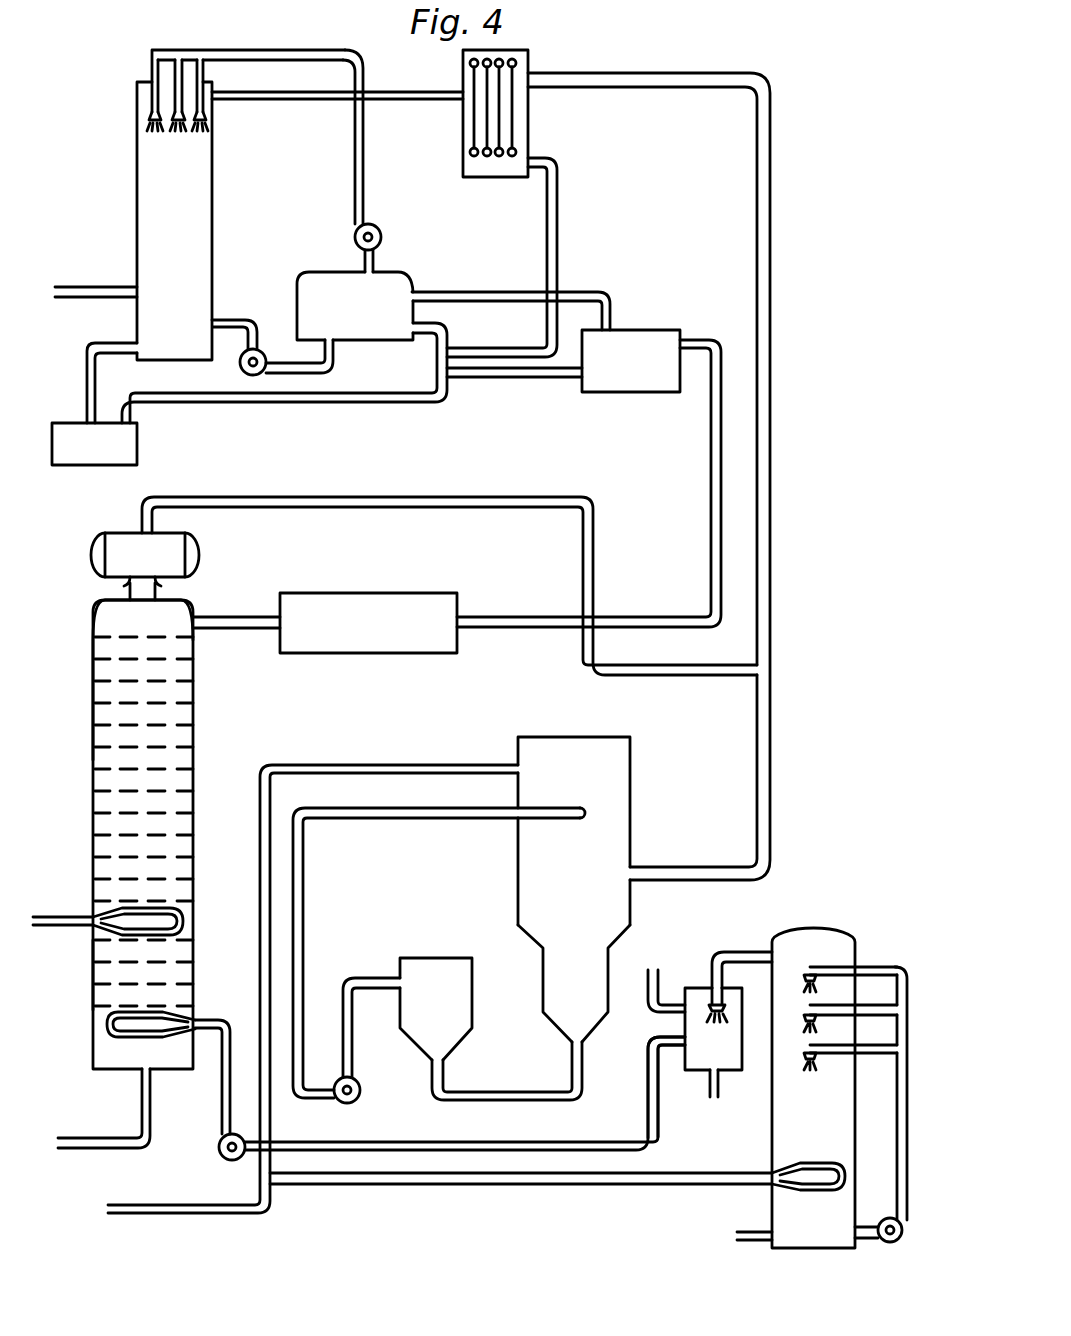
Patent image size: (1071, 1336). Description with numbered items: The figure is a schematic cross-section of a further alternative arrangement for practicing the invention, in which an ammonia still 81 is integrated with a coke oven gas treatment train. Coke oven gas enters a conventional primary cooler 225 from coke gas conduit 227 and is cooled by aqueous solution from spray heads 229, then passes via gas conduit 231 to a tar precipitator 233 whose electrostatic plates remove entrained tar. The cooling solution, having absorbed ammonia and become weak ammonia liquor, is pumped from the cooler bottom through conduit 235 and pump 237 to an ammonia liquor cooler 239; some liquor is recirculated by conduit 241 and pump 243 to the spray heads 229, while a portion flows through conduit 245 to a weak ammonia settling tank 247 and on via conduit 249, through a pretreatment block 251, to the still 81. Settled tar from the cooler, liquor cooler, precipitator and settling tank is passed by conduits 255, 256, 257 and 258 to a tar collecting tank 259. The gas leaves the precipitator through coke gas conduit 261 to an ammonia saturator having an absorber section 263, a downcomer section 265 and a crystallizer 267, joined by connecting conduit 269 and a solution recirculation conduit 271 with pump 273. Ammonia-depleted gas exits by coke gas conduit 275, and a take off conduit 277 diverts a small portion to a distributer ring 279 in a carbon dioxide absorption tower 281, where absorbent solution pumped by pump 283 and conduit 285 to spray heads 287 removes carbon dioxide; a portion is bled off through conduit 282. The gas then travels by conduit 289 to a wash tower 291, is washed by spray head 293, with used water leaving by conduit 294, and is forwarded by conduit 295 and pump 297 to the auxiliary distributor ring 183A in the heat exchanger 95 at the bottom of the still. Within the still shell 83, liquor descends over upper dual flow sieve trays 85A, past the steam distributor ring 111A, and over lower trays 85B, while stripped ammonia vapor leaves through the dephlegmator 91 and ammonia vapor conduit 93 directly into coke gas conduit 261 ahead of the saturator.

The ammonia still 81 is at (226, 691).
The shell 83 is at (93, 718).
The dual flow sieve trays 85A is at (178, 727).
The dual flow sieve trays 85B is at (115, 843).
The dephlegmator 91 is at (196, 548).
The ammonia discharge conduit 93 is at (541, 497).
The heat exchanger 95 is at (93, 976).
The distributor ring 111A is at (182, 913).
The distributor ring 183A is at (102, 1024).
The primary cooler 225 is at (214, 206).
The coke gas conduit 227 is at (113, 286).
The spray heads 229 is at (150, 95).
The gas conduit 231 is at (289, 100).
The tar precipitator 233 is at (530, 122).
The conduit 235 is at (248, 320).
The pump 237 is at (240, 369).
The ammonia liquor cooler 239 is at (400, 272).
The conduit 241 is at (365, 137).
The pump 243 is at (380, 228).
The conduit 245 is at (498, 291).
The weak ammonia settling tank 247 is at (645, 330).
The conduit 249 is at (710, 492).
The block 251 is at (352, 593).
The conduit 255 is at (85, 352).
The conduit 256 is at (437, 371).
The conduit 257 is at (559, 222).
The conduit 258 is at (547, 390).
The tar collecting tank 259 is at (137, 444).
The coke gas conduit 261 is at (772, 226).
The absorber section 263 is at (630, 765).
The downcomer section 265 is at (540, 960).
The crystallizer 267 is at (443, 957).
The connecting conduit 269 is at (497, 1092).
The solution recirculation conduit 271 is at (305, 884).
The pump 273 is at (360, 1092).
The coke gas conduit 275 is at (355, 765).
The take off conduit 277 is at (530, 1187).
The distributer ring 279 is at (818, 1163).
The carbon dioxide absorption tower 281 is at (826, 928).
The conduit 282 is at (758, 1232).
The pump 283 is at (888, 1243).
The conduit 285 is at (907, 1125).
The spray heads 287 is at (811, 1053).
The conduit 289 is at (728, 952).
The wash tower 291 is at (683, 1028).
The spray head 293 is at (713, 1029).
The conduit 294 is at (711, 1090).
The conduit 295 is at (627, 1138).
The pump 297 is at (220, 1148).